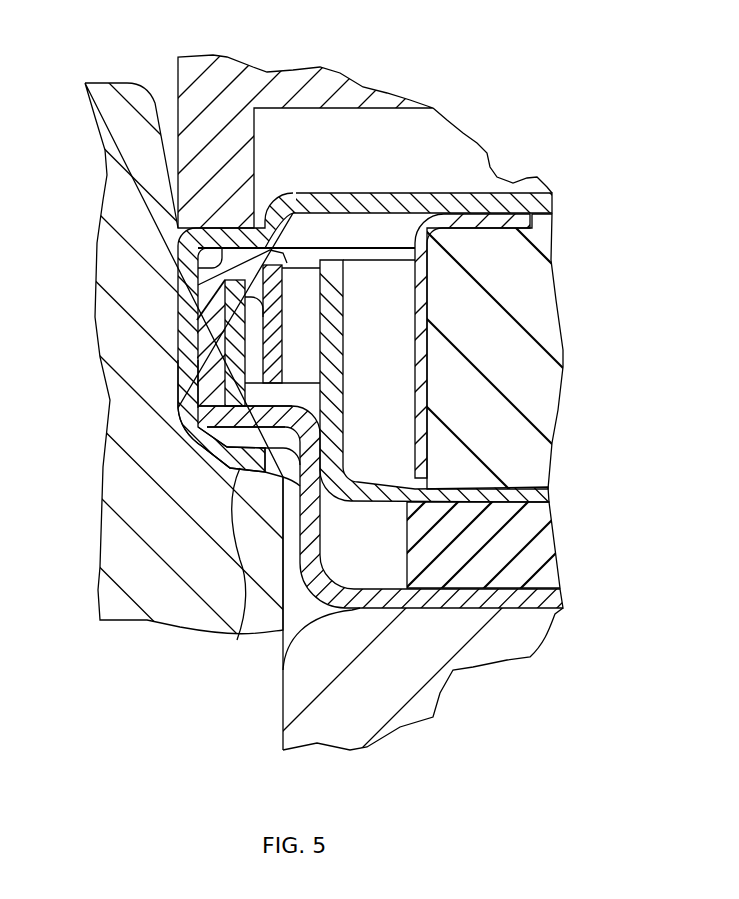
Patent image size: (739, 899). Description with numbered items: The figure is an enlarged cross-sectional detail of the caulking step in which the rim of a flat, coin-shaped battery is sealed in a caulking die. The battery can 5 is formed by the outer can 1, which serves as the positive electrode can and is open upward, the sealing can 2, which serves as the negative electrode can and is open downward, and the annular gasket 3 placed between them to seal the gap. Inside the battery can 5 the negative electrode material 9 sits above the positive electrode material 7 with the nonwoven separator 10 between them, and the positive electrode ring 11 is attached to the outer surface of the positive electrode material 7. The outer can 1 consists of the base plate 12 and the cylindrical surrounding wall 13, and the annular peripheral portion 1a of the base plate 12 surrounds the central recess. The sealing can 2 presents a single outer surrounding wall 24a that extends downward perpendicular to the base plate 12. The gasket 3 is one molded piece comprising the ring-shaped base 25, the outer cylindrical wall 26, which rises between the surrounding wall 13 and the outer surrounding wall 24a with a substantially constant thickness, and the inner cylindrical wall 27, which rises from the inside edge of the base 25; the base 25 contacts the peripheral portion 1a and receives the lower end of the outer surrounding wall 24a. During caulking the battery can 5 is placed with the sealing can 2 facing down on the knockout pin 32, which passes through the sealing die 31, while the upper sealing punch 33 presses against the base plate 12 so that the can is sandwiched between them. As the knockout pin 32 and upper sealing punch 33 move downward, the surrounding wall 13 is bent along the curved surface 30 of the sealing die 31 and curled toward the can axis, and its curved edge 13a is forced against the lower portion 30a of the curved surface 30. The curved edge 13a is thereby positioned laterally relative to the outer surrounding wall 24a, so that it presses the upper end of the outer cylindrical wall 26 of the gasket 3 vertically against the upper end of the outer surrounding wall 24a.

The outer can 1 is at (369, 449).
The peripheral portion 1a is at (198, 268).
The sealing can 2 is at (520, 612).
The gasket 3 is at (189, 331).
The battery can 5 is at (369, 449).
The positive electrode material 7 is at (550, 337).
The negative electrode material 9 is at (544, 544).
The separator 10 is at (522, 493).
The positive electrode ring 11 is at (427, 373).
The base plate 12 is at (514, 192).
The surrounding wall 13 is at (200, 307).
The curved edge 13a is at (238, 556).
The outer surrounding wall 24a is at (198, 365).
The base 25 is at (236, 253).
The outer cylindrical wall 26 is at (217, 425).
The inner cylindrical wall 27 is at (270, 323).
The curved surface 30 is at (280, 374).
The lower portion 30a is at (237, 462).
The sealing die 31 is at (113, 530).
The knockout pin 32 is at (417, 708).
The upper sealing punch 33 is at (187, 80).